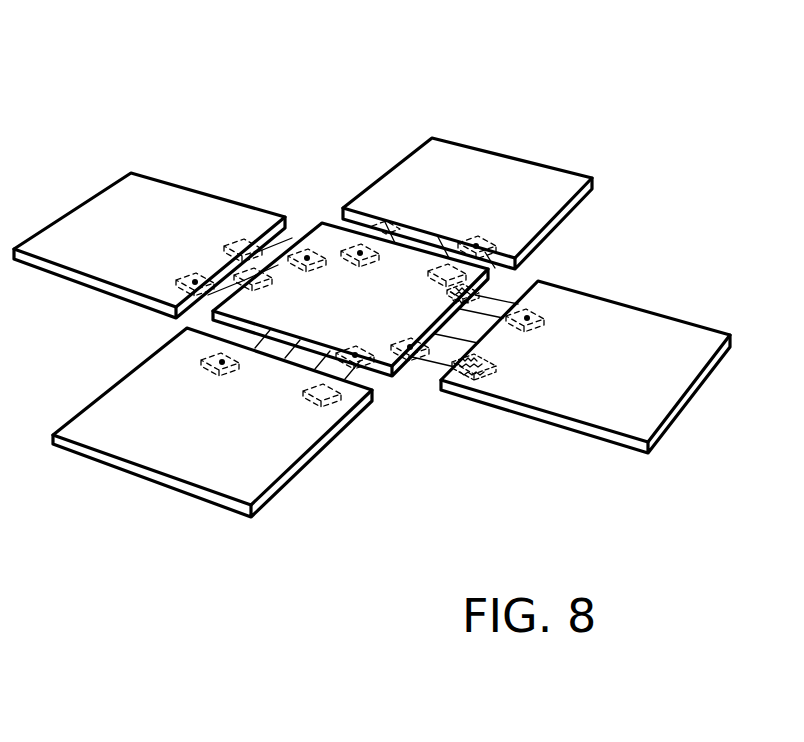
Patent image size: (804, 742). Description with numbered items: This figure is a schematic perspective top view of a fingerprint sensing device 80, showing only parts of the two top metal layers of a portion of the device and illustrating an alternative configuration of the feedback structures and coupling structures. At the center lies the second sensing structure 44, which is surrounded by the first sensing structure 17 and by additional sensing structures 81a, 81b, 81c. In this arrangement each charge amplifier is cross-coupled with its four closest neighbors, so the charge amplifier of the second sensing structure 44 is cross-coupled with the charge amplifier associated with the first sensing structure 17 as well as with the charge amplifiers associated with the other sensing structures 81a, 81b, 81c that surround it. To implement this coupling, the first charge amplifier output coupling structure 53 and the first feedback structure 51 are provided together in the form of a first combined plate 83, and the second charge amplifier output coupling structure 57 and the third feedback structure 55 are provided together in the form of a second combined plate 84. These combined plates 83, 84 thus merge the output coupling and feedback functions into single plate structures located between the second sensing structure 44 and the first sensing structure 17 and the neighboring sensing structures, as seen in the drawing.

The fingerprint sensing device 80 is at (683, 124).
The additional sensing structure 81a is at (491, 180).
The additional sensing structure 81b is at (195, 221).
The additional sensing structure 81c is at (246, 474).
The first sensing structure 17 is at (696, 346).
The second sensing structure 44 is at (476, 290).
The first charge amplifier output coupling structure 53 is at (458, 290).
The first combined plate 83 is at (498, 302).
The second combined plate 84 is at (441, 361).
The first feedback structure 51 is at (538, 312).
The third feedback structure 55 is at (389, 362).
The second charge amplifier output coupling structure 57 is at (480, 370).